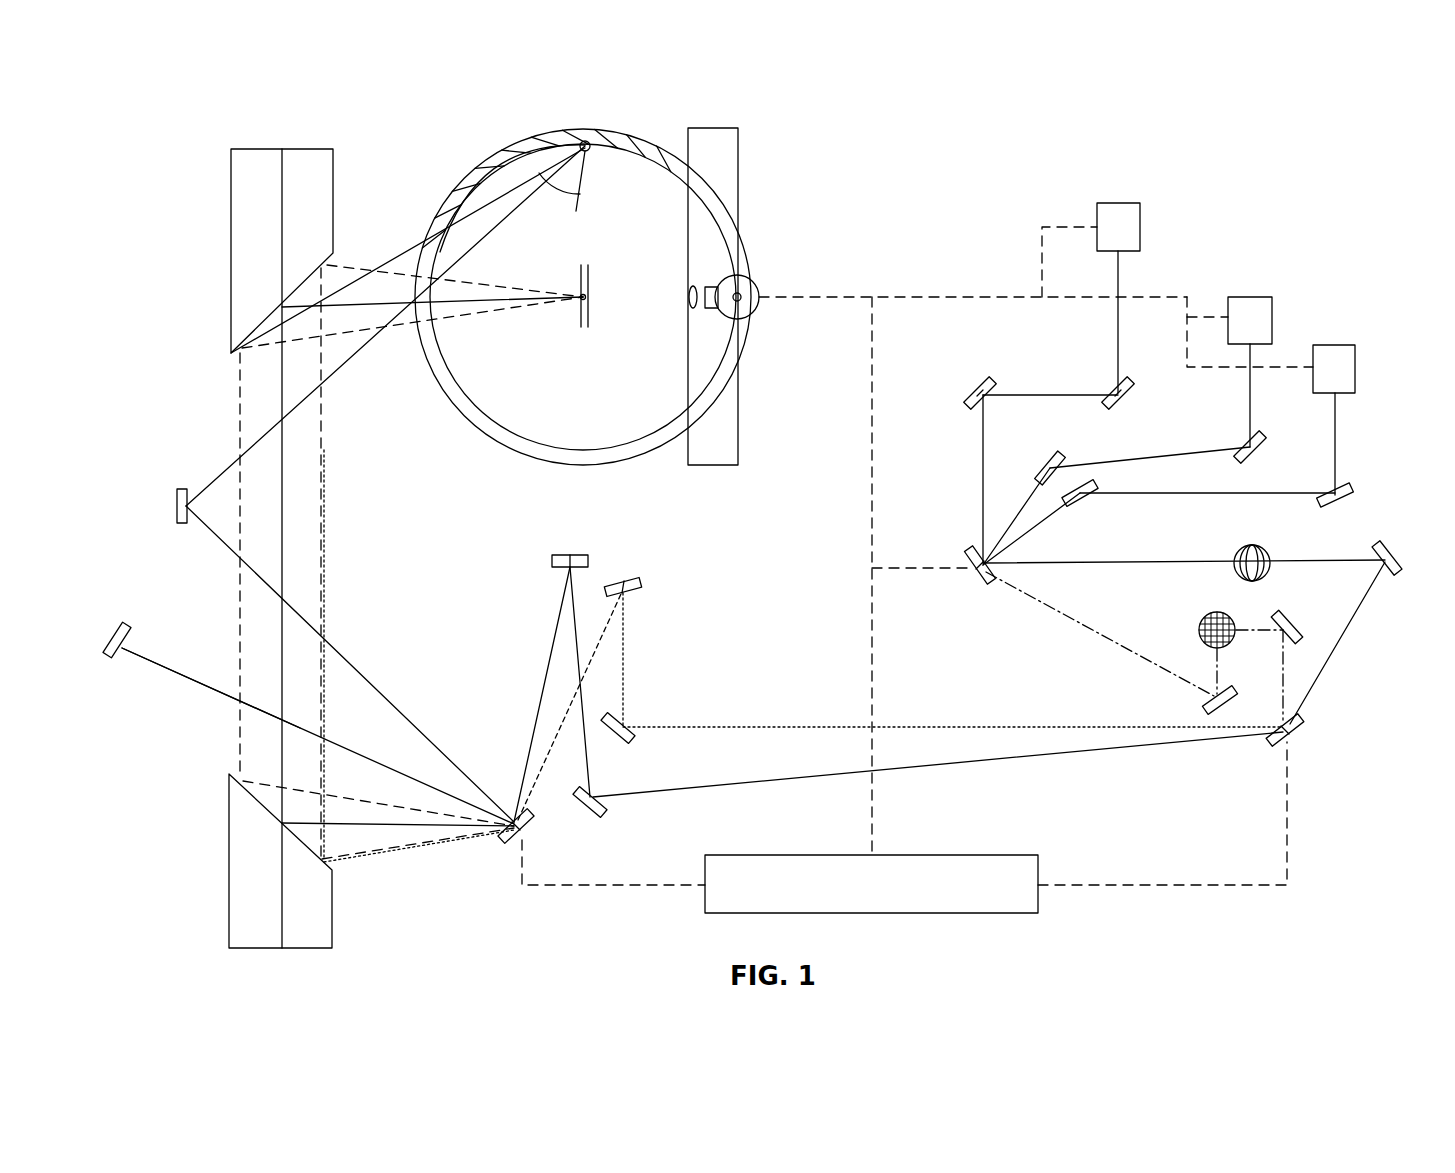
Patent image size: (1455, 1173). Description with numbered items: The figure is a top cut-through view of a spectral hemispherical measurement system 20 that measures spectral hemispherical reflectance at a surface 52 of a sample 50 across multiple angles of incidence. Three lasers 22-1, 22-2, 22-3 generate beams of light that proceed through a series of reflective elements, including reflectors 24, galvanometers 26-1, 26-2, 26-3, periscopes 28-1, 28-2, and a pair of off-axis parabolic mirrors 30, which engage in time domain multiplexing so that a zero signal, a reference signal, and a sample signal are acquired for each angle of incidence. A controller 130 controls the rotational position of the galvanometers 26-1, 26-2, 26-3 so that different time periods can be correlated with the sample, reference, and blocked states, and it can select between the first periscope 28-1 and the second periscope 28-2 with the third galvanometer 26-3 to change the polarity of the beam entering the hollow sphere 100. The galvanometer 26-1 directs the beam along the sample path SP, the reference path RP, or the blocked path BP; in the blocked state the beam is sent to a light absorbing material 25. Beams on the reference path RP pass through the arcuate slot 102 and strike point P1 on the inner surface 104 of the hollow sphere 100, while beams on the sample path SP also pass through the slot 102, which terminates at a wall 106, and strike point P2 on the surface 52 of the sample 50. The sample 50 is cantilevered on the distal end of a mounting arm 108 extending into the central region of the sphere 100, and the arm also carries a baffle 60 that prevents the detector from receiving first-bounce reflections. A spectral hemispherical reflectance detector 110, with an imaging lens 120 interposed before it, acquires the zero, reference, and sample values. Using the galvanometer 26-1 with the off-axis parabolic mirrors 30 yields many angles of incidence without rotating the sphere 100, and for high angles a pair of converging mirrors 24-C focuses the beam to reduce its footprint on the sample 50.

The spectral hemispherical measurement system 20 is at (1323, 178).
The laser 22-1 is at (1140, 228).
The laser 22-2 is at (1272, 312).
The laser 22-3 is at (1355, 372).
The reflector 24 is at (172, 500).
The converging mirror 24-C is at (575, 552).
The light absorbing material 25 is at (108, 628).
The galvanometer 26-1 is at (522, 838).
The galvanometer 26-2 is at (1298, 742).
The galvanometer 26-3 is at (968, 578).
The first periscope 28-1 is at (1238, 552).
The second periscope 28-2 is at (1202, 620).
The off-axis parabolic mirror 30 is at (236, 358).
The sample 50 is at (583, 323).
The surface 52 is at (575, 328).
The baffle 60 is at (592, 320).
The hollow sphere 100 is at (547, 268).
The arcuate slot 102 is at (484, 431).
The inner surface 104 is at (583, 450).
The wall 106 is at (433, 250).
The mounting arm 108 is at (592, 285).
The spectral hemispherical reflectance detector 110 is at (758, 278).
The imaging lens 120 is at (693, 278).
The controller 130 is at (985, 855).
The reference path RP is at (510, 165).
The sample path SP is at (443, 283).
The blocked path BP is at (152, 661).
The point P1 is at (592, 158).
The point P2 is at (580, 292).